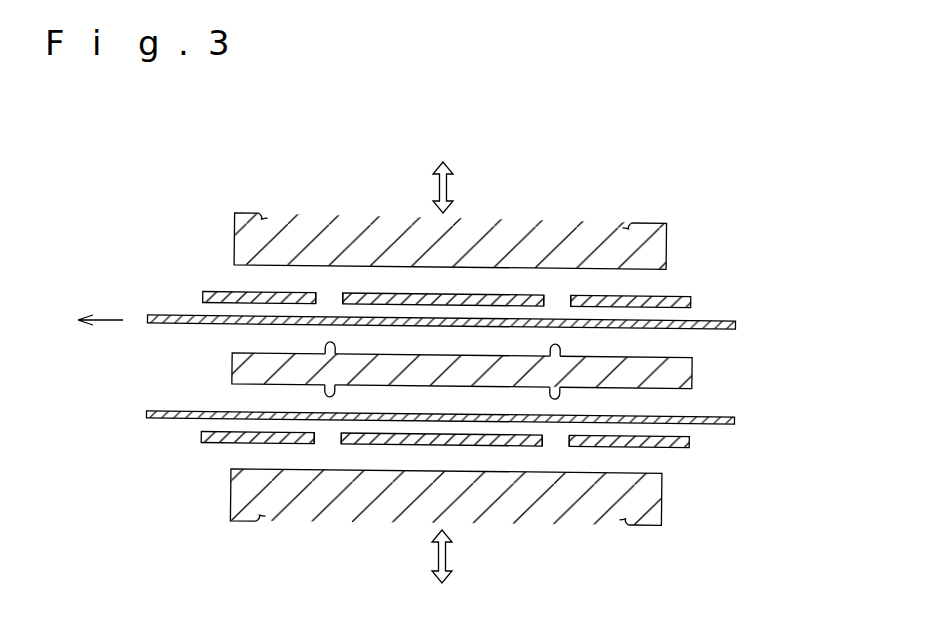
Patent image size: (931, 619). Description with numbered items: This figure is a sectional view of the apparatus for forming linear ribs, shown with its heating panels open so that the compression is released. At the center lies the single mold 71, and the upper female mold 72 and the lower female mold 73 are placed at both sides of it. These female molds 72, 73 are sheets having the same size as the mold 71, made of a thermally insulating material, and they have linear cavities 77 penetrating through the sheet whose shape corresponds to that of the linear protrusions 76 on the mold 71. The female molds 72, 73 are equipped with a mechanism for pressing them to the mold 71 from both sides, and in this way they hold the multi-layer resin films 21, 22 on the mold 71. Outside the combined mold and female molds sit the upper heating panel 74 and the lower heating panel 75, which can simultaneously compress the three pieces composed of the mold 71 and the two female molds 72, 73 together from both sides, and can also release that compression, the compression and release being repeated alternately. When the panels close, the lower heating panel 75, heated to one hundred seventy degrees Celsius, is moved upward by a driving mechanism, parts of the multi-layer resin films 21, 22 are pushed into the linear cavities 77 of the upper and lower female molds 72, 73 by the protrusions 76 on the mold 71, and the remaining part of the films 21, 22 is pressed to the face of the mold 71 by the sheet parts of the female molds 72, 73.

The multi-layer resin film 21 is at (722, 322).
The multi-layer resin film 22 is at (719, 416).
The mold 71 is at (233, 379).
The upper female mold 72 is at (680, 298).
The lower female mold 73 is at (695, 446).
The upper heating panel 74 is at (234, 245).
The lower heating panel 75 is at (652, 503).
The protrusion 76 is at (327, 342).
The linear cavity 77 is at (331, 323).